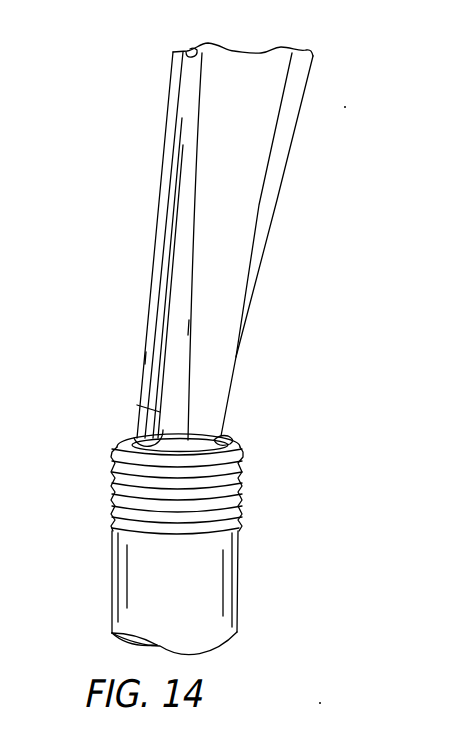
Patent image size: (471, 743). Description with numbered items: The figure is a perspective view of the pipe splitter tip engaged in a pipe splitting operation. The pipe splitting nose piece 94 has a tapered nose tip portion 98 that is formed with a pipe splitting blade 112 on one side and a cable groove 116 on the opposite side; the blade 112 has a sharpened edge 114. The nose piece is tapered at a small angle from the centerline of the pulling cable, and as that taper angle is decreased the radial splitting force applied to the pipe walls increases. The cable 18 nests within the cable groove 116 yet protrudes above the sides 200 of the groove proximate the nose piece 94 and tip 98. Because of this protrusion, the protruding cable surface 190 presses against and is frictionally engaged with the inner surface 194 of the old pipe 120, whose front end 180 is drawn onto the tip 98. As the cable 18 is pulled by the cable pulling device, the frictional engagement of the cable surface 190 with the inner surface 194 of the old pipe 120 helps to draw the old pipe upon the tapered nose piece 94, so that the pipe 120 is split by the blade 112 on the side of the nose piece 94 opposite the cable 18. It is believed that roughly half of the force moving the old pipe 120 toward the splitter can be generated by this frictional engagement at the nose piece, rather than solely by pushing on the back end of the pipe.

The pipe splitting nose piece 94 is at (253, 145).
The cable 18 is at (177, 243).
The cable groove 116 is at (186, 279).
The sides of the groove 200 is at (188, 325).
The protruding cable surface 190 is at (160, 411).
The inner surface of the old pipe 194 is at (134, 440).
The pipe splitting blade 112 is at (255, 263).
The sharpened edge 114 is at (256, 304).
The tapered nose tip portion 98 is at (216, 442).
The front end of the pipe 180 is at (227, 475).
The pipe 120 is at (213, 592).